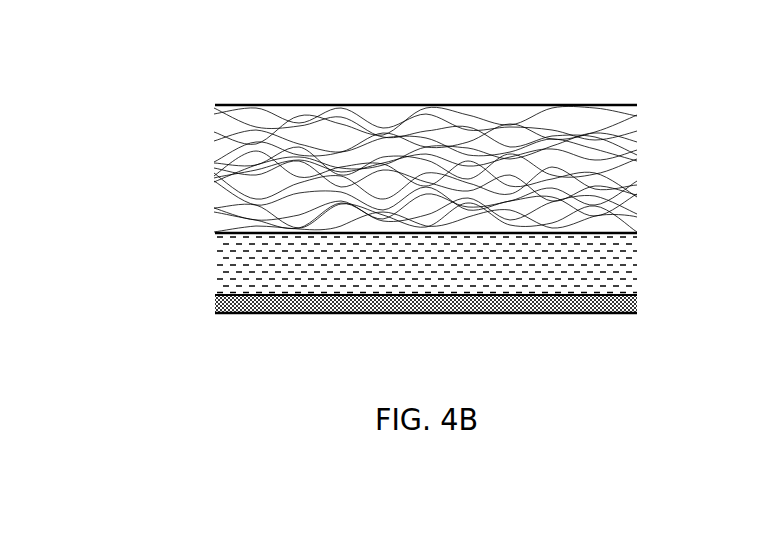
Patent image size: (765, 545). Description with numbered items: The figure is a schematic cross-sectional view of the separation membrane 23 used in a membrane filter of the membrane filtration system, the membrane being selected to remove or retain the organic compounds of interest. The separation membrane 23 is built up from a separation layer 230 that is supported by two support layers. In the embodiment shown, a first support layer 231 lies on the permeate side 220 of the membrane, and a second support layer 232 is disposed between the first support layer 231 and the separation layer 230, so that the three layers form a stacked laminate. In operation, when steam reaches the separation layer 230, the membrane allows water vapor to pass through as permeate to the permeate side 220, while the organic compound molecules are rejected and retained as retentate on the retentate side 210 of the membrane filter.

The separation membrane 23 is at (220, 55).
The permeate side 220 is at (415, 104).
The first support layer 231 is at (215, 172).
The second support layer 232 is at (217, 265).
The separation layer 230 is at (217, 306).
The retentate side 210 is at (290, 315).